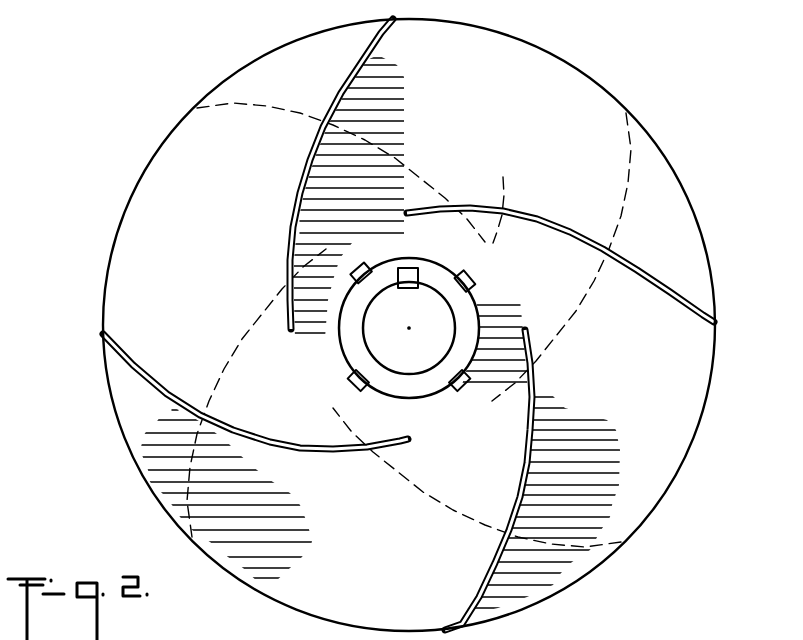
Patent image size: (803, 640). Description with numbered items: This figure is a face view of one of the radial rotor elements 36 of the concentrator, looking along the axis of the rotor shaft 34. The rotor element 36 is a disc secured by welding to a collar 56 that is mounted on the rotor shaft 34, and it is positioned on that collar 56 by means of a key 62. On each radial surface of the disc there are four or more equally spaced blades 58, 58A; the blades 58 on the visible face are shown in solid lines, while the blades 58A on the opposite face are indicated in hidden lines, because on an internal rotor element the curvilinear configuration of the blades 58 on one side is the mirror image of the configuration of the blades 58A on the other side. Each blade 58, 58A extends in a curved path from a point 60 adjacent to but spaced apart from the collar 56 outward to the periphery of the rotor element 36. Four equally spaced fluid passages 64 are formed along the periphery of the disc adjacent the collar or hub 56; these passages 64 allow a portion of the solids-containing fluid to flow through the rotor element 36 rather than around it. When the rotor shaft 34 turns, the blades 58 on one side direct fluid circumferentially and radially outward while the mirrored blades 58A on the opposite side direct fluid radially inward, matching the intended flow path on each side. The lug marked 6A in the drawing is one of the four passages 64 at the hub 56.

The rotor shaft 34 is at (453, 328).
The radial rotor element 36 is at (652, 413).
The collar 56 is at (464, 294).
The blades 58 is at (684, 288).
The blades 58A is at (632, 203).
The point 60 is at (407, 211).
The key 62 is at (417, 270).
The fluid passages 64 is at (462, 379).
The hub lug 6A is at (348, 376).